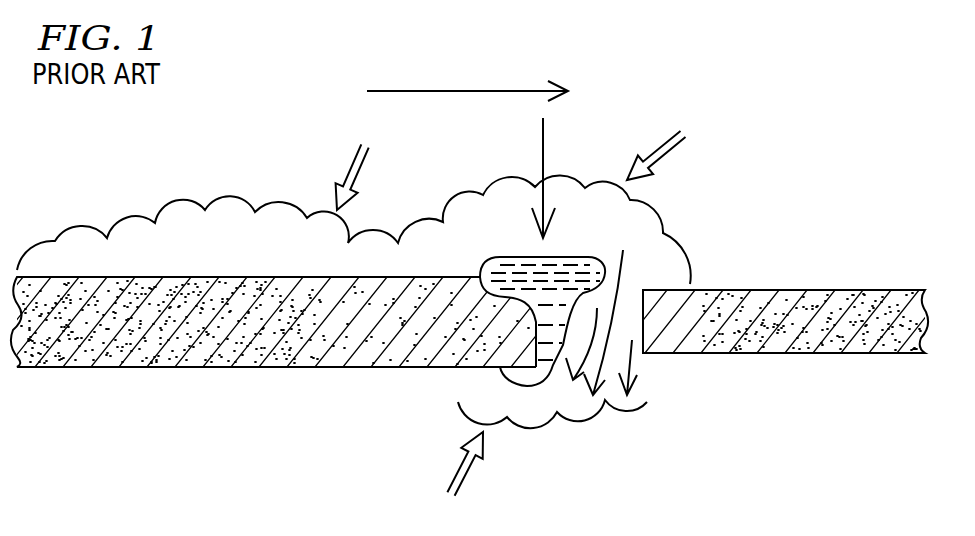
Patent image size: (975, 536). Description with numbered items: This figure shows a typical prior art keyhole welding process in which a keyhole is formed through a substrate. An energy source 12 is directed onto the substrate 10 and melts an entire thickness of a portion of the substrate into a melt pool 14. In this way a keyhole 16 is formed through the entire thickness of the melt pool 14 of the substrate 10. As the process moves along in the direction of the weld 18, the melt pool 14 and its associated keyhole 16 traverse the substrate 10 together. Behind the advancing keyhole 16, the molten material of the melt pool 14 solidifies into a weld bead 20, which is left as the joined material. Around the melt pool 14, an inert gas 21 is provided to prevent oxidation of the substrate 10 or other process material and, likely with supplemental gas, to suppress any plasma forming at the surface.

The substrate 10 is at (735, 305).
The energy source 12 is at (543, 153).
The melt pool 14 is at (568, 250).
The keyhole 16 is at (632, 280).
The direction of the weld 18 is at (447, 91).
The weld bead 20 is at (252, 295).
The inert gas 21 is at (458, 472).